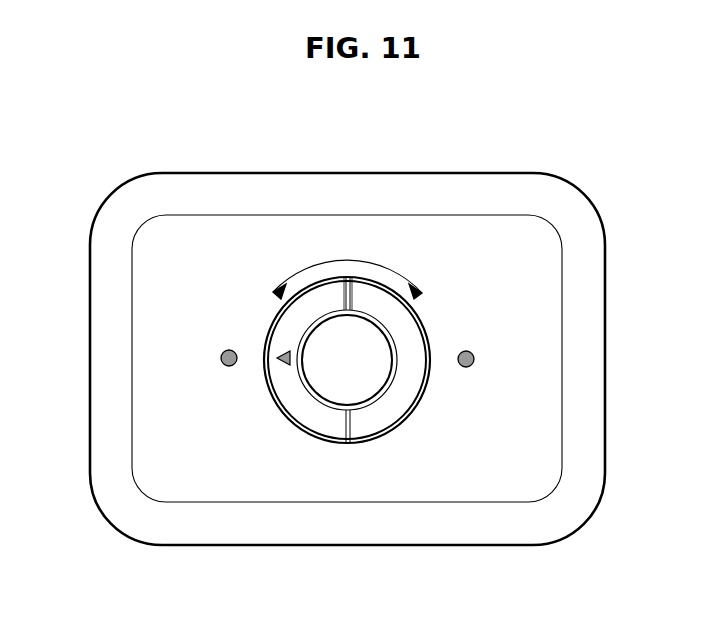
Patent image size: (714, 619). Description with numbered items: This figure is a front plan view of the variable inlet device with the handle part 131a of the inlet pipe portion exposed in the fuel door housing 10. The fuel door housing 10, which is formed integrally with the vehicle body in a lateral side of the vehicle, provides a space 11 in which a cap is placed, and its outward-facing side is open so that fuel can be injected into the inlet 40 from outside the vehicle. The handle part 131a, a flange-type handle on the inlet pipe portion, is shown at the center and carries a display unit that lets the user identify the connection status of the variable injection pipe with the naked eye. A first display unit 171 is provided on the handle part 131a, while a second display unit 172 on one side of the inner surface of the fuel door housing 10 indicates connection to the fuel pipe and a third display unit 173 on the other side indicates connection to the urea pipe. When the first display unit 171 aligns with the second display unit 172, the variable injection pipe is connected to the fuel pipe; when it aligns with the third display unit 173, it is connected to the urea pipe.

The fuel door housing 10 is at (502, 173).
The space 11 is at (451, 456).
The inlet 40 is at (347, 369).
The handle part 131a is at (363, 293).
The first display unit 171 is at (277, 352).
The second display unit 172 is at (221, 353).
The third display unit 173 is at (474, 356).